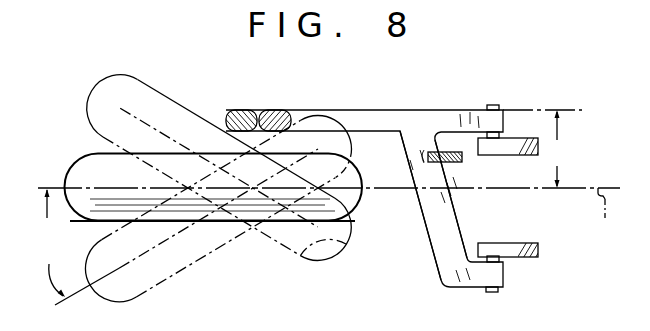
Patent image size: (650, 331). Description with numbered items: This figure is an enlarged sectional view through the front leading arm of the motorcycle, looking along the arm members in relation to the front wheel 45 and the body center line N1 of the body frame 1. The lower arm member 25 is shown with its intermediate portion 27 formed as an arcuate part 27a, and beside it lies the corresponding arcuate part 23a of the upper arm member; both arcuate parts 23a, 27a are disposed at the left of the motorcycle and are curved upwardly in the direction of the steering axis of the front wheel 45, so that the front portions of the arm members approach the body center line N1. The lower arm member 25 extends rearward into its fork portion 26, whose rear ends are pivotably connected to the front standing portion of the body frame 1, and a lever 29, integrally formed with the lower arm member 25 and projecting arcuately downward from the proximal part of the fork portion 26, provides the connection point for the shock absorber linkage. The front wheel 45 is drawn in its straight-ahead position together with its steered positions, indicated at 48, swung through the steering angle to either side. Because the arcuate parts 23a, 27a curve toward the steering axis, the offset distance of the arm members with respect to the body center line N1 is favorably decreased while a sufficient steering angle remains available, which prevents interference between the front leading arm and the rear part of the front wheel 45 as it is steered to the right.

The front wheel 45 is at (70, 150).
The rotated blank position 48 is at (358, 198).
The intermediate portion of lower arm member 27 is at (353, 112).
The lower arm member 25 is at (418, 221).
The fork portion 26 is at (452, 222).
The arcuate part 23a is at (232, 110).
The arcuate part 27a is at (283, 110).
The lever 29 is at (427, 150).
The body frame 1 is at (505, 155).
The body center line N1 is at (609, 219).